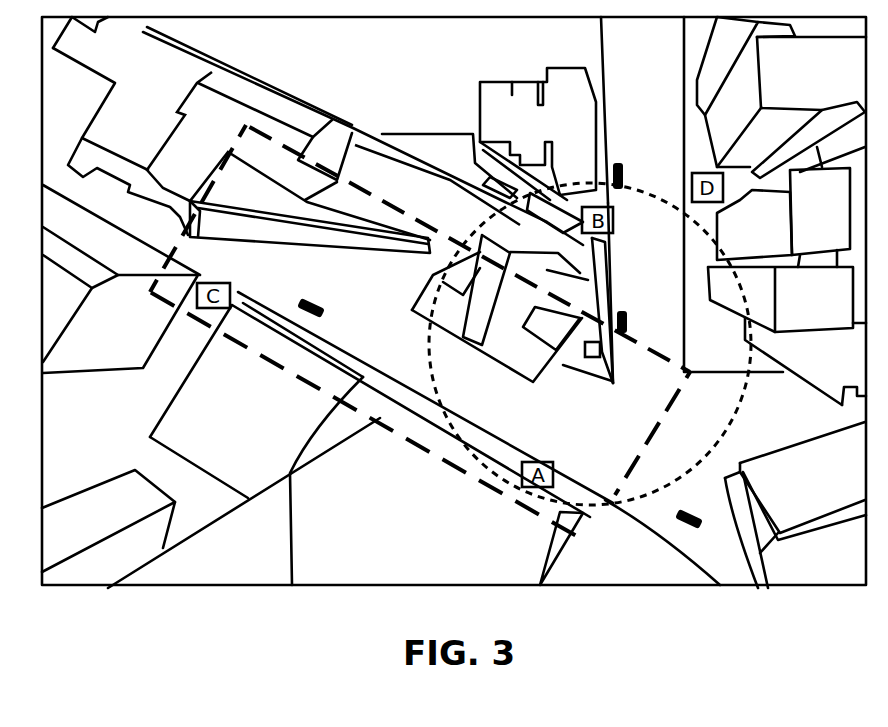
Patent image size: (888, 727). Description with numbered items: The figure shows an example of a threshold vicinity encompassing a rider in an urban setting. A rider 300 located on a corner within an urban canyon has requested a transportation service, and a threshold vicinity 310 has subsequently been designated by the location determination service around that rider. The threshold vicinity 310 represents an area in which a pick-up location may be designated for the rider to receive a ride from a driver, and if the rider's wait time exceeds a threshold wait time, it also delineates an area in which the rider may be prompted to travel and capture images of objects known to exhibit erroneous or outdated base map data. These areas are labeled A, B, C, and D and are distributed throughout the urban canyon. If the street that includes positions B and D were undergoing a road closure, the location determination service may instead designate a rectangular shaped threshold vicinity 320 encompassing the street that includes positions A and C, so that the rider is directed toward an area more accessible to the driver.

The rider 300 is at (612, 348).
The threshold vicinity 310 is at (470, 200).
The threshold vicinity 320 is at (190, 172).